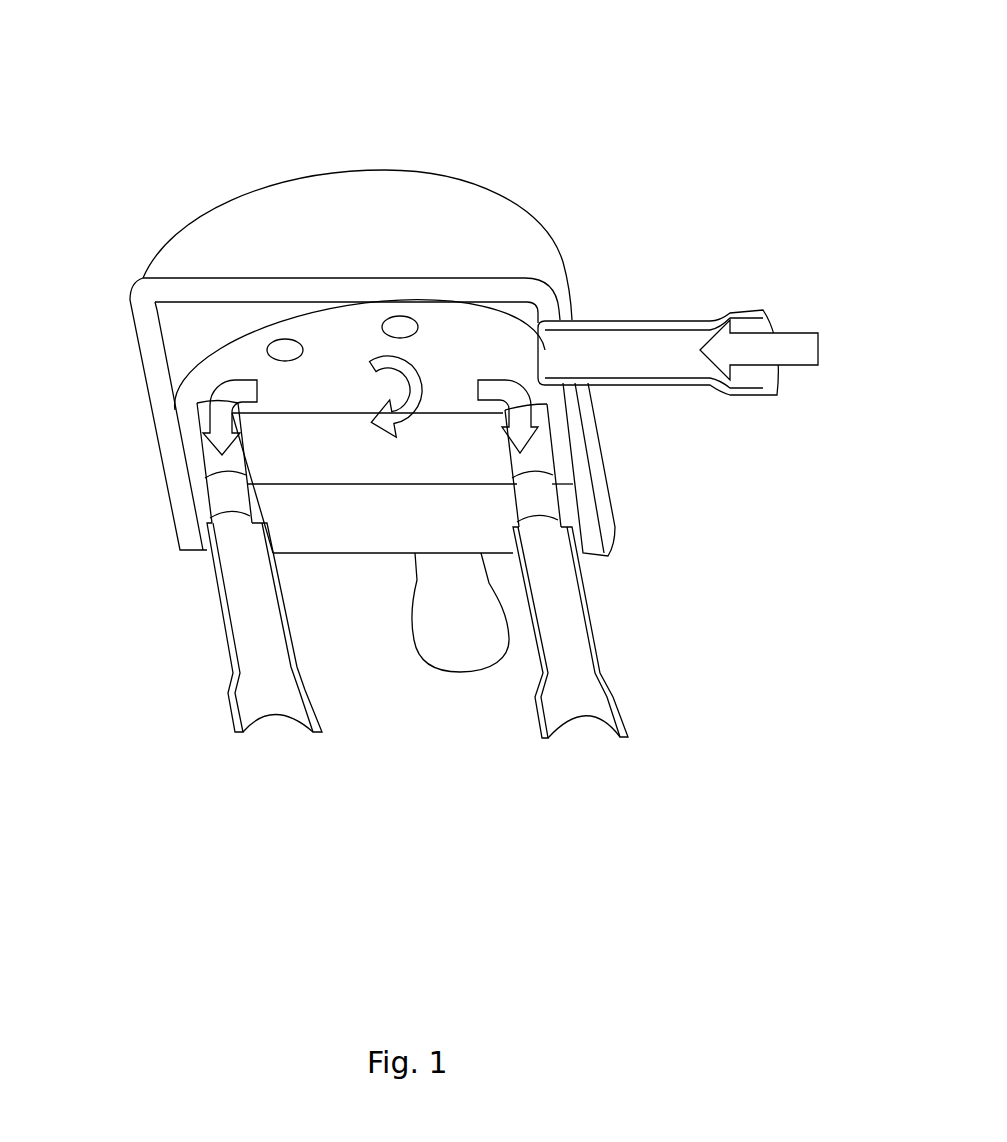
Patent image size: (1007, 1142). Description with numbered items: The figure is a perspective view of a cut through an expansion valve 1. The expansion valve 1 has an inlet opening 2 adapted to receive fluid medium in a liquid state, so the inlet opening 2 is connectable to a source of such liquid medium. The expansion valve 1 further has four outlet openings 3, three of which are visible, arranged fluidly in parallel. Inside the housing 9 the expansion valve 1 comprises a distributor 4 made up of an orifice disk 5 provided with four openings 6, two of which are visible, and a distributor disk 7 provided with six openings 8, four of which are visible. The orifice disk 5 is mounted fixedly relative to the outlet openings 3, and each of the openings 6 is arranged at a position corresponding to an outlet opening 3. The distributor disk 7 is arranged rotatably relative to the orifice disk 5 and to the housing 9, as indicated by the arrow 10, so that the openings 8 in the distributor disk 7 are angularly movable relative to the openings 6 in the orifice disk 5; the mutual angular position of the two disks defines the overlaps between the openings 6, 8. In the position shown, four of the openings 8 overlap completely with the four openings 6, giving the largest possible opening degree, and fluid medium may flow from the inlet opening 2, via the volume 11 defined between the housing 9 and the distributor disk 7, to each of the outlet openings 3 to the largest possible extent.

The expansion valve 1 is at (455, 424).
The inlet opening 2 is at (762, 328).
The outlet openings 3 is at (585, 732).
The distributor 4 is at (378, 417).
The orifice disk 5 is at (342, 523).
The openings 6 is at (232, 487).
The distributor disk 7 is at (248, 358).
The openings 8 is at (285, 345).
The housing 9 is at (530, 262).
The arrow 10 is at (410, 390).
The volume 11 is at (173, 340).